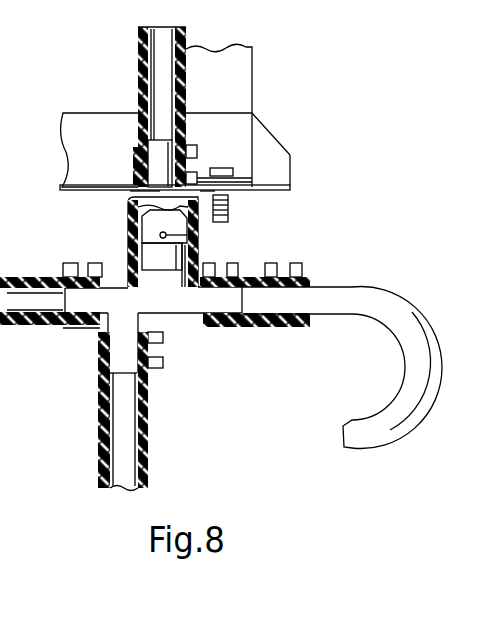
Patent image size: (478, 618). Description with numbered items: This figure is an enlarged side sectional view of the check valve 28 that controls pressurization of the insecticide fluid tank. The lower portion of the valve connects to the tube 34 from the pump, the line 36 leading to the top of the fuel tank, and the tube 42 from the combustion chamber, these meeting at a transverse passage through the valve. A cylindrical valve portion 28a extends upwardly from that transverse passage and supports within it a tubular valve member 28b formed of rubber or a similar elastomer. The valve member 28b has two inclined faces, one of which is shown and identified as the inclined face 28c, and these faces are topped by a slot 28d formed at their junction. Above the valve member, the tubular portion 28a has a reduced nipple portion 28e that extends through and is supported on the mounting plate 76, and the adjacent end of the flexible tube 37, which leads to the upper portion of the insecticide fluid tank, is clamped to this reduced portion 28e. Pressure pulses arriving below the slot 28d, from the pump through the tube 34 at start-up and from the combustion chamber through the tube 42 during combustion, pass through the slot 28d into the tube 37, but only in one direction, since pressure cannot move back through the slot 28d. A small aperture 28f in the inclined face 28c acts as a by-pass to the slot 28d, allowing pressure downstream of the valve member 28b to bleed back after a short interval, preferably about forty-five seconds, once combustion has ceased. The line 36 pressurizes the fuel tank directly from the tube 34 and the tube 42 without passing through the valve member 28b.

The flexible tube 37 is at (187, 36).
The check valve 28 is at (270, 113).
The mounting plate 76 is at (259, 187).
The reduced nipple portion 28e is at (163, 153).
The slot 28d is at (130, 205).
The tubular valve member 28b is at (148, 252).
The aperture 28f is at (187, 235).
The inclined face 28c is at (228, 201).
The cylindrical valve portion 28a is at (185, 248).
The line 36 is at (5, 327).
The tube 34 is at (140, 435).
The tube 42 is at (415, 353).